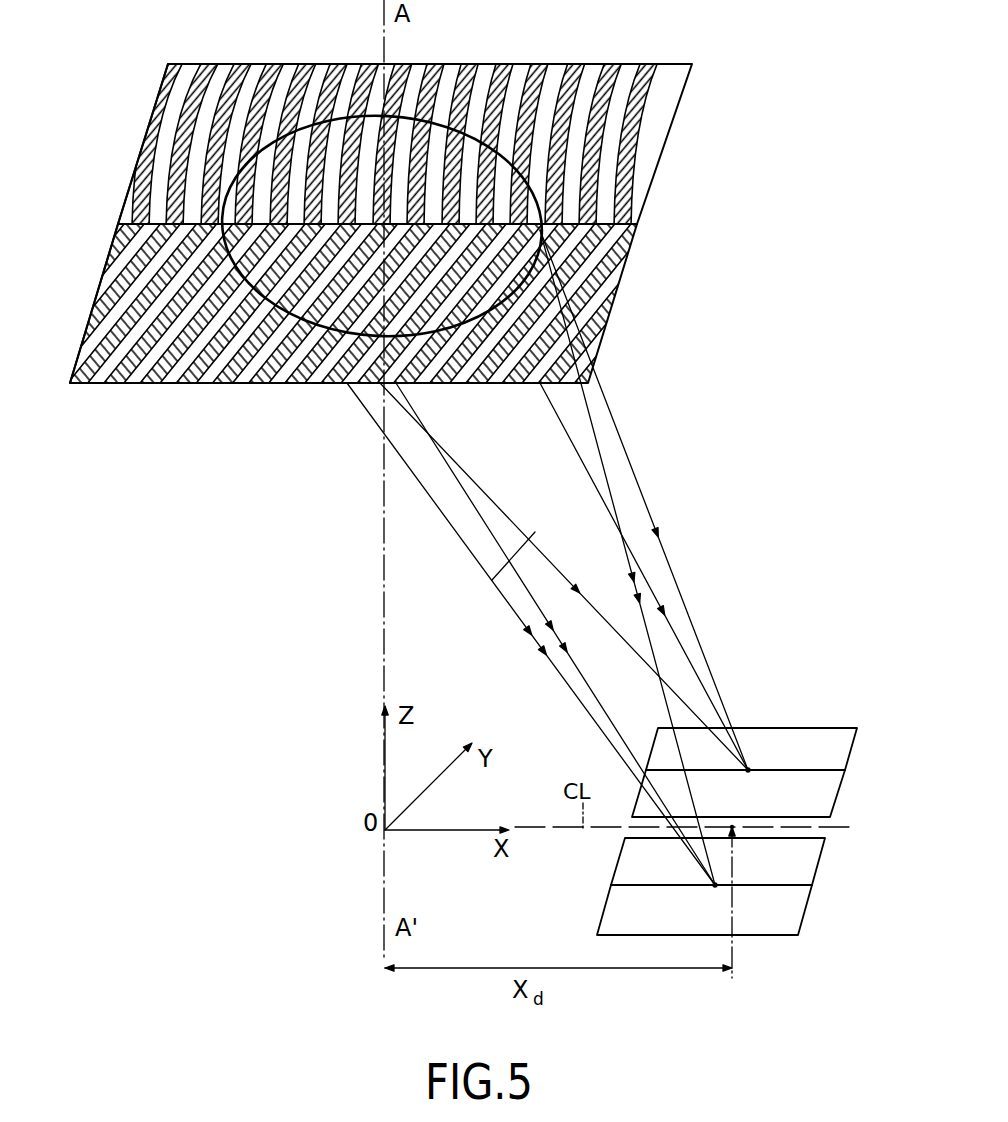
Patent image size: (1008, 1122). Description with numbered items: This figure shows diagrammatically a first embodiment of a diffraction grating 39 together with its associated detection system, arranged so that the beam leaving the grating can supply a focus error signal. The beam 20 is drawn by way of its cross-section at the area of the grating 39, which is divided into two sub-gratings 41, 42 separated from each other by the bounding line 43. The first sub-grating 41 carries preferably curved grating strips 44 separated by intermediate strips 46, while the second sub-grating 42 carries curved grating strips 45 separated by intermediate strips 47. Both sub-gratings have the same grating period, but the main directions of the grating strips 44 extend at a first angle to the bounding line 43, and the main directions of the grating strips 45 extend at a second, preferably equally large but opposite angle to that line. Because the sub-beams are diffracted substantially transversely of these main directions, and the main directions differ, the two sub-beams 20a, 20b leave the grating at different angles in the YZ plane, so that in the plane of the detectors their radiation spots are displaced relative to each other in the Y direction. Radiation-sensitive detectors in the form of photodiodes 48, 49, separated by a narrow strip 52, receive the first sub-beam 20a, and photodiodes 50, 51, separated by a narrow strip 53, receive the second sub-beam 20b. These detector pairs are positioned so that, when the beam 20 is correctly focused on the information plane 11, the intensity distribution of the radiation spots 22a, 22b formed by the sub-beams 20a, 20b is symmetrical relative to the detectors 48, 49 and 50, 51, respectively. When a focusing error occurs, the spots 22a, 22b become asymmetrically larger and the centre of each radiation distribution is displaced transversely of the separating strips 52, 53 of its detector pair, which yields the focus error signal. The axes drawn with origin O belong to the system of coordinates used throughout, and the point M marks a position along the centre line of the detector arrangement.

The grating 39 is at (594, 57).
The sub-grating 41 is at (150, 121).
The line 43 is at (118, 224).
The sub-grating 42 is at (79, 348).
The beam 20 is at (330, 64).
The grating strips 44 is at (450, 63).
The intermediate strips 46 is at (503, 63).
The grating strips 45 is at (213, 384).
The intermediate strips 47 is at (266, 384).
The sub-beam 20a is at (606, 413).
The sub-beam 20b is at (636, 560).
The information plane 11 is at (847, 687).
The photodiode 48 is at (837, 743).
The narrow strip 52 is at (825, 768).
The photodiode 49 is at (817, 798).
The photodiode 50 is at (802, 852).
The narrow strip 53 is at (797, 880).
The photodiode 51 is at (780, 915).
The radiation spot 22a is at (748, 768).
The radiation spot 22b is at (718, 890).
The center point M is at (738, 822).